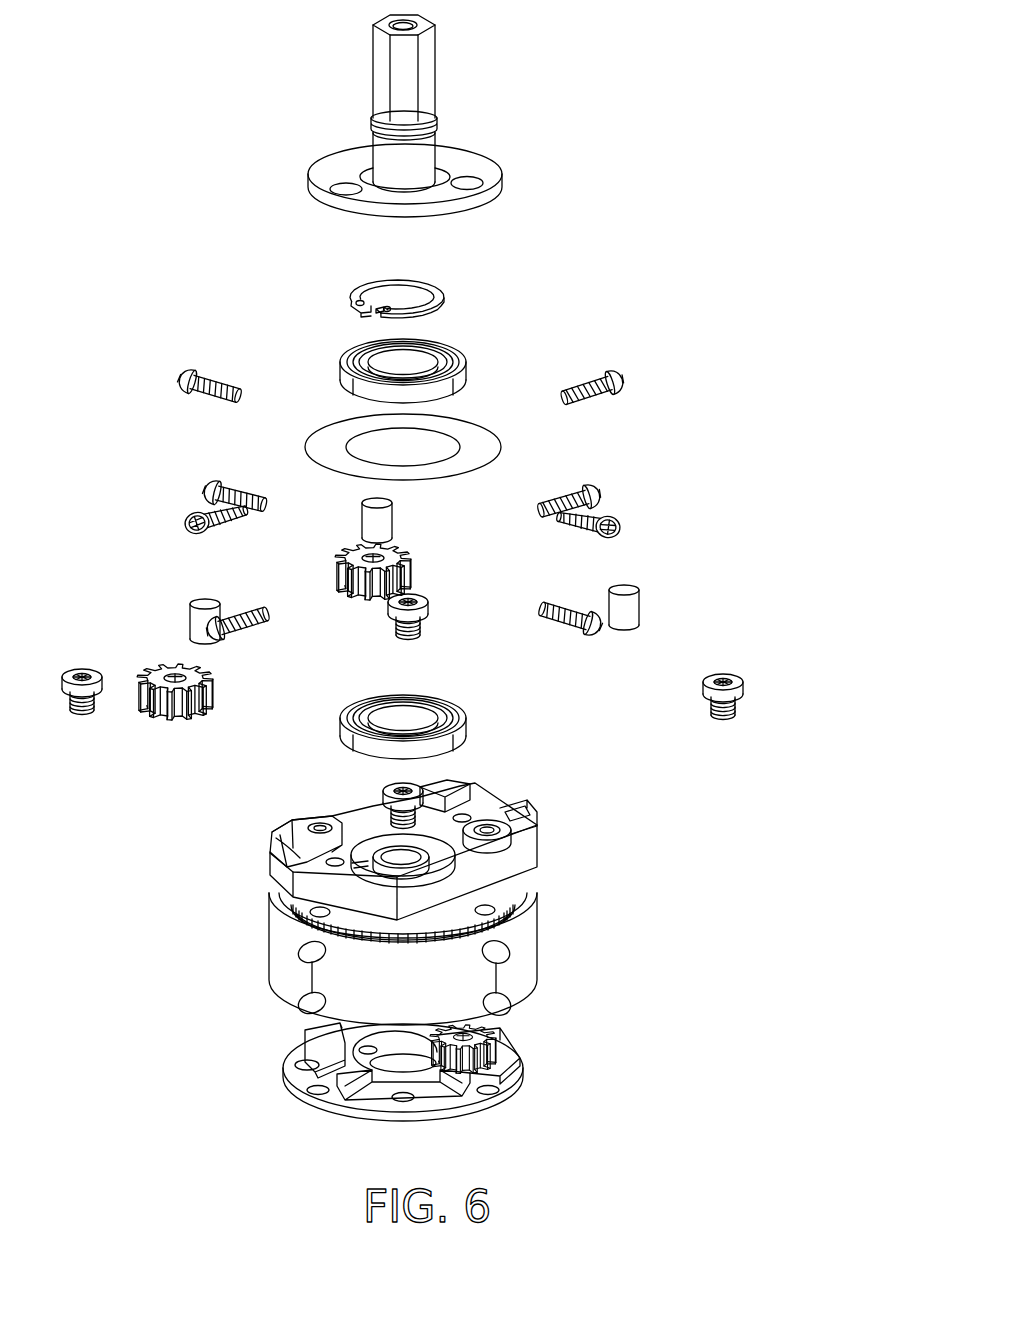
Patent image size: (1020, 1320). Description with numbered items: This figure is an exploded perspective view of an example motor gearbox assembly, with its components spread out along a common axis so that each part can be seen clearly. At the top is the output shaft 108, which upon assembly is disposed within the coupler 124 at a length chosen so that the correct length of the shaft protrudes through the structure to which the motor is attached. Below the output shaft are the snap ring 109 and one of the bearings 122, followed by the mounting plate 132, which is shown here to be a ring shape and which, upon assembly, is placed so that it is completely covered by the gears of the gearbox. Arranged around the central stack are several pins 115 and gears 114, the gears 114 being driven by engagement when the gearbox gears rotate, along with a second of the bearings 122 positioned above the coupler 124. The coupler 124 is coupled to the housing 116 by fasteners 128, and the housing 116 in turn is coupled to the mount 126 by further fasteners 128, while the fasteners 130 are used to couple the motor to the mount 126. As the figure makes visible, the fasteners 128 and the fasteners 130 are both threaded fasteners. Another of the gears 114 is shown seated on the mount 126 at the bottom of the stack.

The output shaft 108 is at (455, 140).
The snap ring 109 is at (430, 283).
The bearings 122 is at (458, 351).
The mounting plate 132 is at (500, 447).
The fasteners 128 is at (180, 376).
The pins 115 is at (395, 518).
The gears 114 is at (346, 550).
The fasteners 130 is at (428, 611).
The coupler 124 is at (537, 817).
The housing 116 is at (540, 939).
The mount 126 is at (410, 1118).